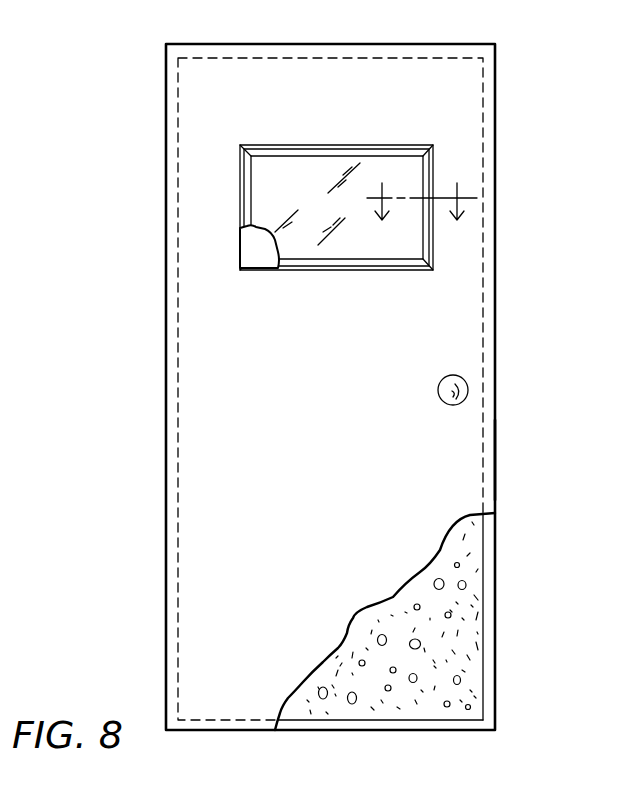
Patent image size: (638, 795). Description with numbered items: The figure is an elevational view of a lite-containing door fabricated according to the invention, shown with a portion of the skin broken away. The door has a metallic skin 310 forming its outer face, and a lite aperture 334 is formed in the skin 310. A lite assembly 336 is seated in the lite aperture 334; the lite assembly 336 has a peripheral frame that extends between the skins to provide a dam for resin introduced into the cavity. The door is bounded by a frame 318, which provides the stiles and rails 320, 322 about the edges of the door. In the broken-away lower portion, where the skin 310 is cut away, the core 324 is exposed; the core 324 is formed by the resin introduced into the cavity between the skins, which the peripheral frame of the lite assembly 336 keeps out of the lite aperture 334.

The metallic skin 310 is at (402, 377).
The frame 318 is at (495, 570).
The stile 320 is at (495, 472).
The rail 322 is at (460, 44).
The core 324 is at (423, 682).
The lite aperture 334 is at (252, 260).
The lite assembly 336 is at (373, 150).